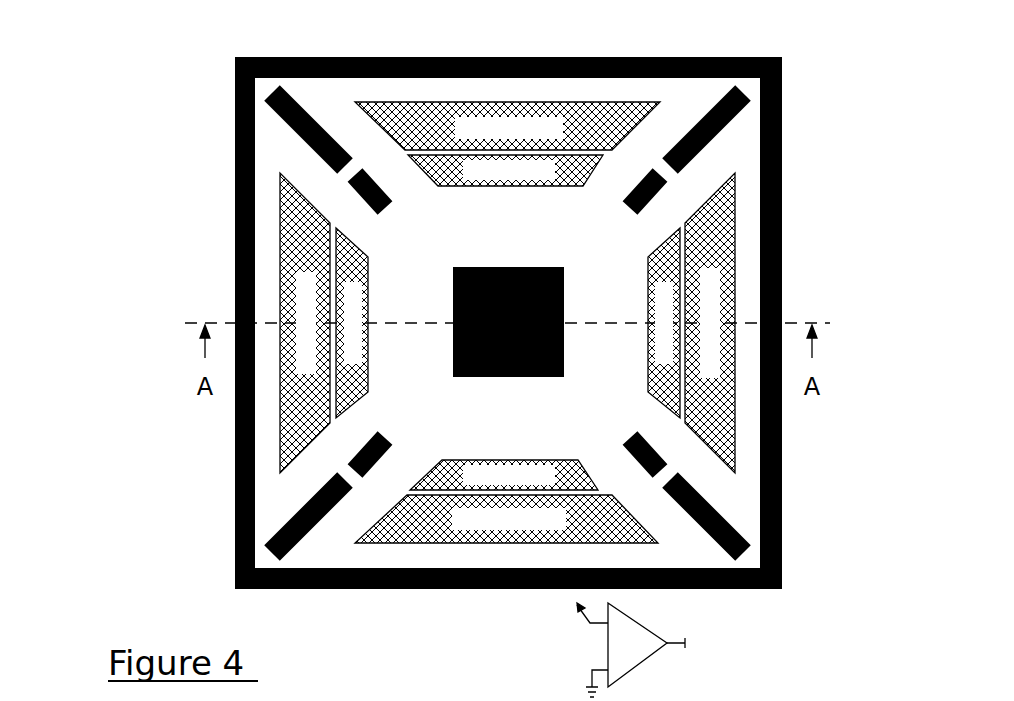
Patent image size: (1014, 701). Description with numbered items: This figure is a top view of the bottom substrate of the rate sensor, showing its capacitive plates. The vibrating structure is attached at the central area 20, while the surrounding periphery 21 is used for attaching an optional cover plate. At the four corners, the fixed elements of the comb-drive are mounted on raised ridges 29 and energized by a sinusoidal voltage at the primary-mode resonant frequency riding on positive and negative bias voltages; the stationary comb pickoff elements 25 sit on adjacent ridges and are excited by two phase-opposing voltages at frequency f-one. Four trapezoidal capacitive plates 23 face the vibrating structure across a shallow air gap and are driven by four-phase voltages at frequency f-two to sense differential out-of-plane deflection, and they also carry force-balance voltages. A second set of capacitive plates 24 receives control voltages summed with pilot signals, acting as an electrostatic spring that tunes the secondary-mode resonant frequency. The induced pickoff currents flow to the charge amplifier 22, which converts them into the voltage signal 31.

The attachment area 20 is at (497, 267).
The periphery 21 is at (753, 57).
The charge amplifier 22 is at (633, 657).
The trapezoidal capacitive plates 23 is at (440, 125).
The second set of capacitive plates 24 is at (573, 185).
The stationary comb pickoff elements 25 is at (393, 212).
The raised ridges 29 is at (265, 100).
The voltage signal 31 is at (676, 640).